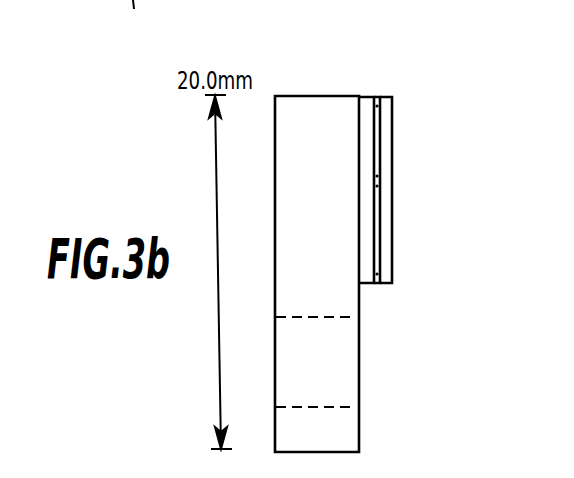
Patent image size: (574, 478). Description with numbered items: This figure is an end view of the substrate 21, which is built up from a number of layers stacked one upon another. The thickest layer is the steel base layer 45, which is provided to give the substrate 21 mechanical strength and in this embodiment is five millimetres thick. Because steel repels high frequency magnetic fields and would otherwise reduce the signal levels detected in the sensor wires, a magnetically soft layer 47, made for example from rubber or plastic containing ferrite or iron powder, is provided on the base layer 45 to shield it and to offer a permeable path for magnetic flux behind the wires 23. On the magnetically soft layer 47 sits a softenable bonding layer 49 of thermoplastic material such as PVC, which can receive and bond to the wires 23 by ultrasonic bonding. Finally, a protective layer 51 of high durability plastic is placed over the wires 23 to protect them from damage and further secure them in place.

The substrate 21 is at (310, 92).
The magnetically soft layer 47 is at (361, 98).
The softenable bonding layer 49 is at (378, 97).
The protective layer 51 is at (384, 121).
The wires 23 is at (386, 178).
The base layer 45 is at (343, 298).